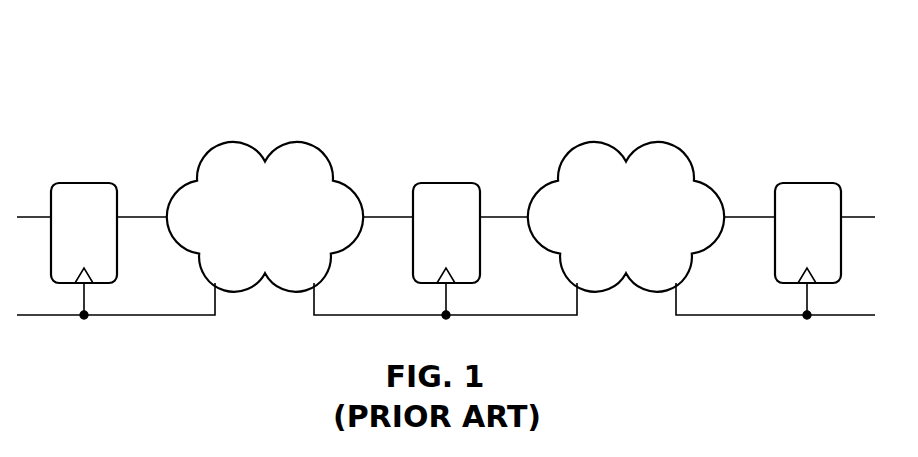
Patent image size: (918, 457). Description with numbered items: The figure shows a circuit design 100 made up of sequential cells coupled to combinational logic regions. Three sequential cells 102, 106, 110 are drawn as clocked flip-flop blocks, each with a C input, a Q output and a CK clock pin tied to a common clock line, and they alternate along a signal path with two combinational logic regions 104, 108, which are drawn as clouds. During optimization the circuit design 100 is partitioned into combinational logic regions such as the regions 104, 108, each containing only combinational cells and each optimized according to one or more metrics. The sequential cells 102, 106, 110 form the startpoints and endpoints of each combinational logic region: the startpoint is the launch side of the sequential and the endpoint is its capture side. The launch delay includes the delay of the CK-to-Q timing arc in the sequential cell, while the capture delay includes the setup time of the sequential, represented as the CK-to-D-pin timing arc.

The circuit design 100 is at (132, 93).
The sequential cell 102 is at (83, 251).
The combinational logic region 104 is at (265, 217).
The sequential cell 106 is at (445, 251).
The combinational logic region 108 is at (626, 217).
The sequential cell 110 is at (807, 251).